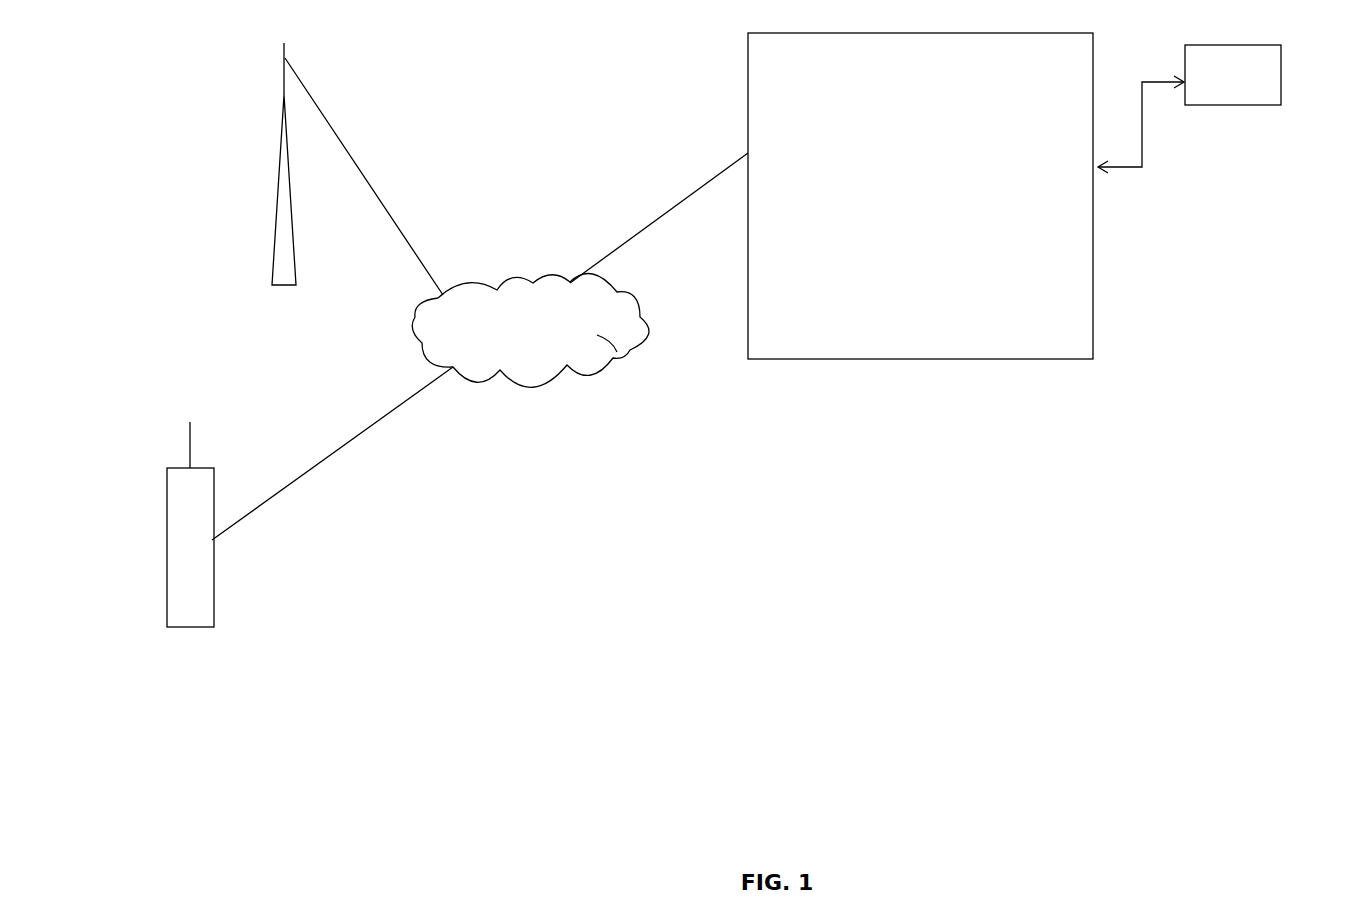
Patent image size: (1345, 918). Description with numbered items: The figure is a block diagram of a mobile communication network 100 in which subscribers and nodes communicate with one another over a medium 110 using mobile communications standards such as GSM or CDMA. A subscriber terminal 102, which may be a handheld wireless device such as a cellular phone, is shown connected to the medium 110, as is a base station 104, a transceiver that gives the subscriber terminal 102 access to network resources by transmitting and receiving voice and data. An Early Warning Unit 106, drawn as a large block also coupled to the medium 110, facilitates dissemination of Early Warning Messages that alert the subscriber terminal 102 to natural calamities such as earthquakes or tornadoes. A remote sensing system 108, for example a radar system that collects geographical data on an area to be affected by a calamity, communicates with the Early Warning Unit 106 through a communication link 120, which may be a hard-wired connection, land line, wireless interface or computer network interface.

The mobile communication network 100 is at (952, 640).
The subscriber terminal 102 is at (207, 632).
The base station 104 is at (275, 183).
The Early Warning Unit (EWU) 106 is at (977, 363).
The remote sensing system 108 is at (1247, 108).
The medium 110 is at (540, 385).
The communication link 120 is at (1142, 167).